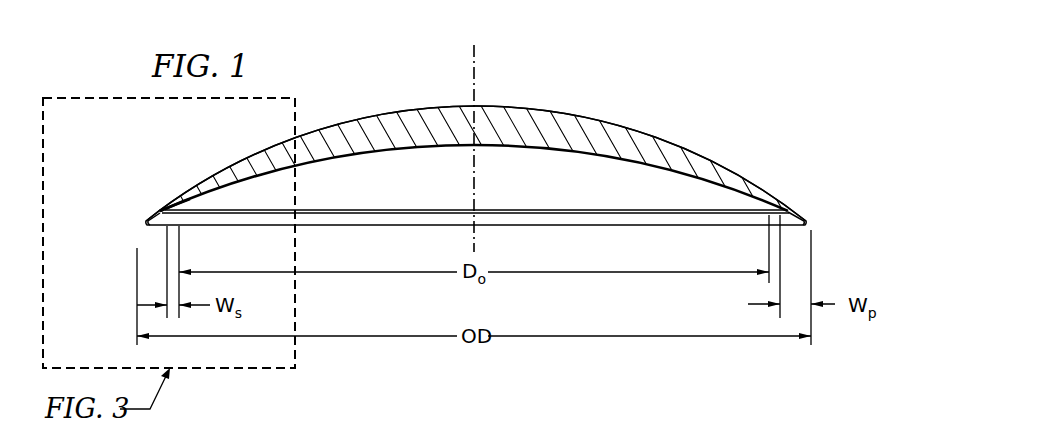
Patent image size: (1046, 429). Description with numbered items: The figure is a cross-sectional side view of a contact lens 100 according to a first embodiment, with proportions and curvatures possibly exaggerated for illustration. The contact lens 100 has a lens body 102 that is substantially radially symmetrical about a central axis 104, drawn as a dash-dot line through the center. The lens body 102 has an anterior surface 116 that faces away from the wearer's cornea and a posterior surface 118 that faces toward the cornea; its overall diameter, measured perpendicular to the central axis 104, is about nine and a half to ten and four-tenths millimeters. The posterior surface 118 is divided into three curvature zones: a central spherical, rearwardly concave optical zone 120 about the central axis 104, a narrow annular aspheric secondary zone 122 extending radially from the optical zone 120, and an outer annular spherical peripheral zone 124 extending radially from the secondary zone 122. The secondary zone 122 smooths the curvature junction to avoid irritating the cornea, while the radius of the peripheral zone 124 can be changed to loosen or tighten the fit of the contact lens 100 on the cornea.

The contact lens 100 is at (739, 110).
The lens body 102 is at (820, 228).
The central axis 104 is at (471, 57).
The anterior surface 116 is at (630, 127).
The posterior surface 118 is at (408, 153).
The optical zone 120 is at (543, 153).
The secondary zone 122 is at (173, 205).
The peripheral zone 124 is at (151, 226).